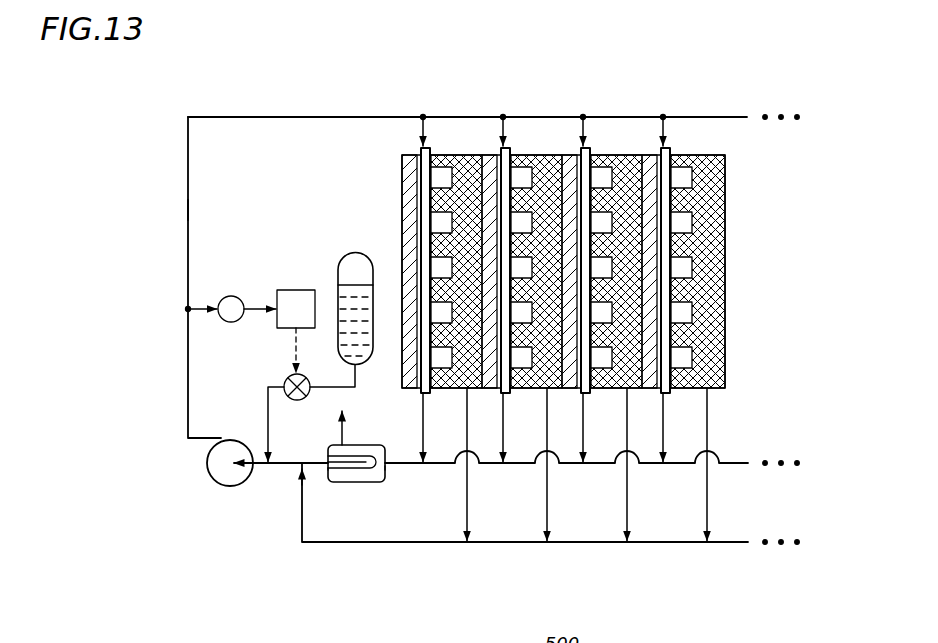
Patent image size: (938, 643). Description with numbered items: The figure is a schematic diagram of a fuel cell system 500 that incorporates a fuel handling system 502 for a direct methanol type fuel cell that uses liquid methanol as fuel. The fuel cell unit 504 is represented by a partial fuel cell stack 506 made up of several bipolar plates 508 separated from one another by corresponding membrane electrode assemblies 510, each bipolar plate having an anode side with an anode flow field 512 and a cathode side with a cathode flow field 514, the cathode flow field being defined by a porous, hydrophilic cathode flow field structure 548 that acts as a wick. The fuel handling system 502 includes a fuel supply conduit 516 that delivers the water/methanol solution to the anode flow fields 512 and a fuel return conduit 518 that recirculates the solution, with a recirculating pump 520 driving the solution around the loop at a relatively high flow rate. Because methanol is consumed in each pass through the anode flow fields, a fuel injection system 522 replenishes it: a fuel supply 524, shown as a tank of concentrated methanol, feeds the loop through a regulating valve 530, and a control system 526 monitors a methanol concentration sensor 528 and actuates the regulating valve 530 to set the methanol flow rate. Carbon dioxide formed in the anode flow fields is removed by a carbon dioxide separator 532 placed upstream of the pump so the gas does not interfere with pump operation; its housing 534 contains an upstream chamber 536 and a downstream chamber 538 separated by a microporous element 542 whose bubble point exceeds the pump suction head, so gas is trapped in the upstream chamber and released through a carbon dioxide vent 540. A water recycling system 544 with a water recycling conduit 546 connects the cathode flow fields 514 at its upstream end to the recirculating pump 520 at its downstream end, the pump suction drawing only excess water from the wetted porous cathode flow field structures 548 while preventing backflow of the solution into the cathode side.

The fuel cell system 500 is at (614, 95).
The fuel handling system 502 is at (186, 208).
The fuel cell unit 504 is at (613, 284).
The fuel cell stack 506 is at (733, 368).
The bipolar plate 508 is at (606, 284).
The membrane electrode assembly 510 is at (669, 151).
The anode flow field 512 is at (657, 397).
The cathode flow field 514 is at (620, 271).
The fuel supply conduit 516 is at (304, 117).
The fuel return conduit 518 is at (517, 466).
The recirculating pump 520 is at (208, 480).
The fuel injection system 522 is at (315, 219).
The fuel supply 524 is at (356, 251).
The control system 526 is at (297, 290).
The methanol concentration sensor 528 is at (232, 296).
The regulating valve 530 is at (286, 377).
The carbon dioxide separator 532 is at (348, 489).
The housing 534 is at (386, 468).
The upstream chamber 536 is at (385, 450).
The downstream chamber 538 is at (329, 468).
The carbon dioxide vent 540 is at (340, 436).
The microporous element 542 is at (347, 472).
The water recycling system 544 is at (630, 548).
The water recycling conduit 546 is at (506, 546).
The cathode flow field structure 548 is at (727, 312).